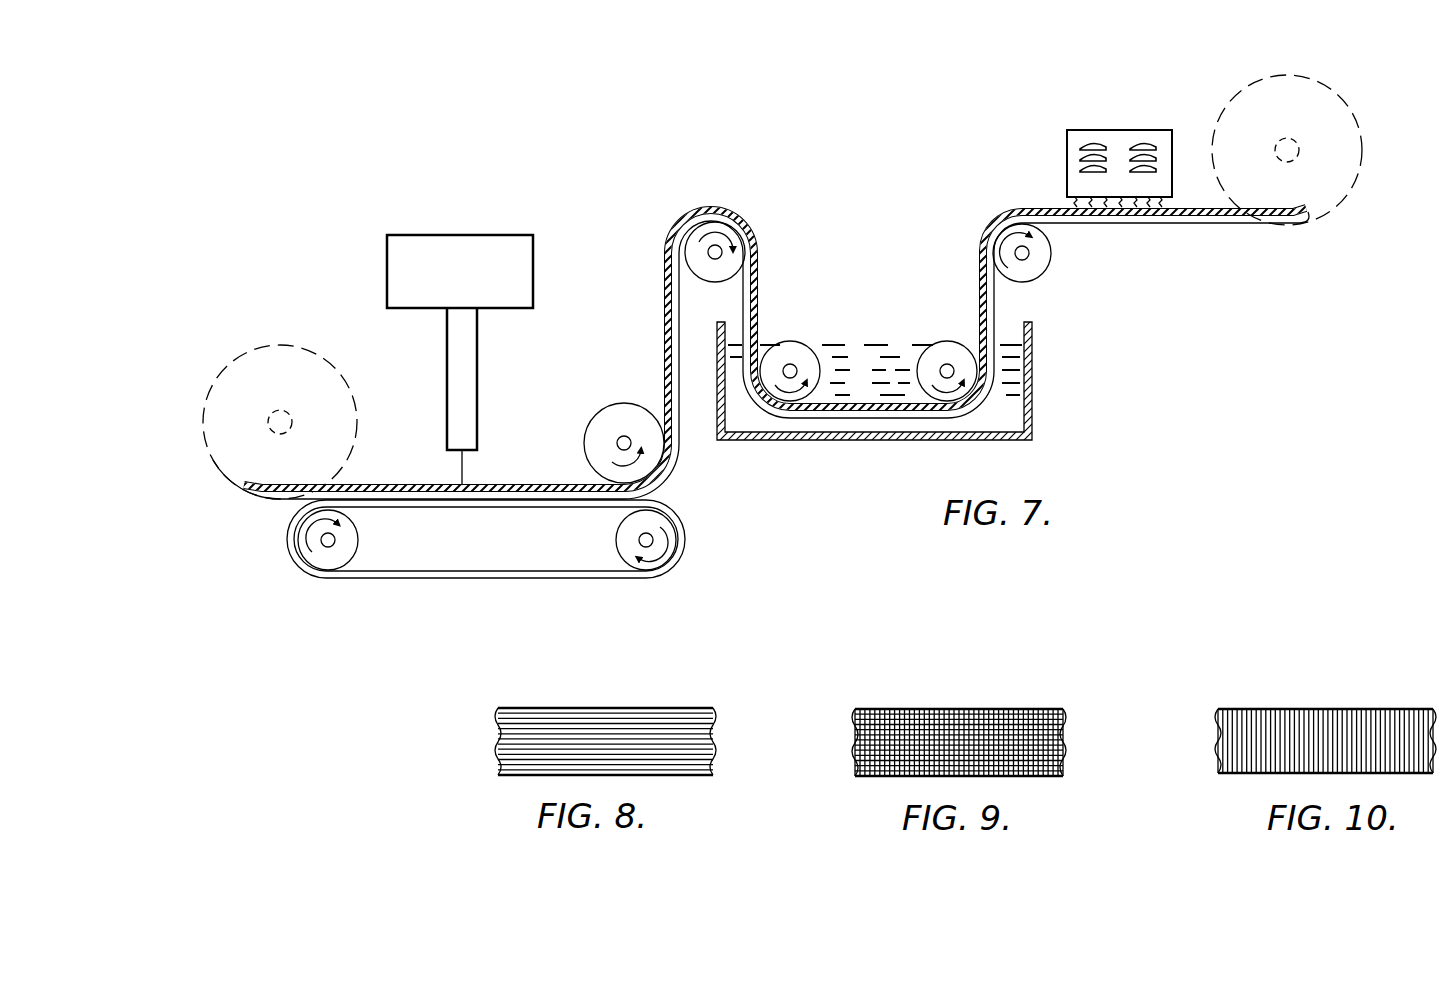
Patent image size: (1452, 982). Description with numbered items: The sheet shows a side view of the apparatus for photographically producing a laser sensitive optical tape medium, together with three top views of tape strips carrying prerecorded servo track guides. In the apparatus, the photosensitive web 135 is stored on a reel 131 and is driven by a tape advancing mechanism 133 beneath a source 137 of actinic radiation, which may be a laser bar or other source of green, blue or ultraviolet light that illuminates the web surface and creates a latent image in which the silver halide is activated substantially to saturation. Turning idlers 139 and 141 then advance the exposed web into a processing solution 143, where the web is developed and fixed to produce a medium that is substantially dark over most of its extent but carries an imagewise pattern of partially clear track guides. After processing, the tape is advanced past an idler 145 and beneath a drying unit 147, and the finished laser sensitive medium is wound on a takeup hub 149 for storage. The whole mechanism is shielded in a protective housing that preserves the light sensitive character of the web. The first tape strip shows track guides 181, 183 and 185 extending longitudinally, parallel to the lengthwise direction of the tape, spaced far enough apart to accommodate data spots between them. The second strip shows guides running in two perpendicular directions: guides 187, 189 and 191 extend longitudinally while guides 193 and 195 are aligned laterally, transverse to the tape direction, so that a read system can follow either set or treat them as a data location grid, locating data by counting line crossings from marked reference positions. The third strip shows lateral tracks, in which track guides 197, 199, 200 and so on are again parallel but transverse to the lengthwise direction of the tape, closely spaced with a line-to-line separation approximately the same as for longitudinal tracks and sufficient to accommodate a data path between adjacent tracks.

In FIG. 7, the reel 131 is at (311, 356).
In FIG. 7, the tape advancing mechanism 133 is at (503, 577).
In FIG. 7, the photosensitive web 135 is at (377, 483).
In FIG. 7, the source of actinic radiation 137 is at (481, 363).
In FIG. 7, the turning idler 139 is at (609, 412).
In FIG. 7, the turning idler 141 is at (731, 264).
In FIG. 7, the processing solution 143 is at (838, 344).
In FIG. 7, the idler 145 is at (1040, 254).
In FIG. 7, the drying unit 147 is at (1117, 137).
In FIG. 7, the takeup hub 149 is at (1340, 123).
In FIG. 8, the track guide 181 is at (530, 710).
In FIG. 8, the track guide 183 is at (572, 722).
In FIG. 8, the track guide 185 is at (647, 737).
In FIG. 9, the track guide 187 is at (877, 717).
In FIG. 9, the track guide 189 is at (927, 725).
In FIG. 9, the track guide 191 is at (977, 735).
In FIG. 9, the track guide 193 is at (1045, 728).
In FIG. 9, the track guide 195 is at (1052, 746).
In FIG. 10, the track guide 197 is at (1255, 725).
In FIG. 10, the track guide 199 is at (1283, 738).
In FIG. 10, the track guide 200 is at (1313, 757).